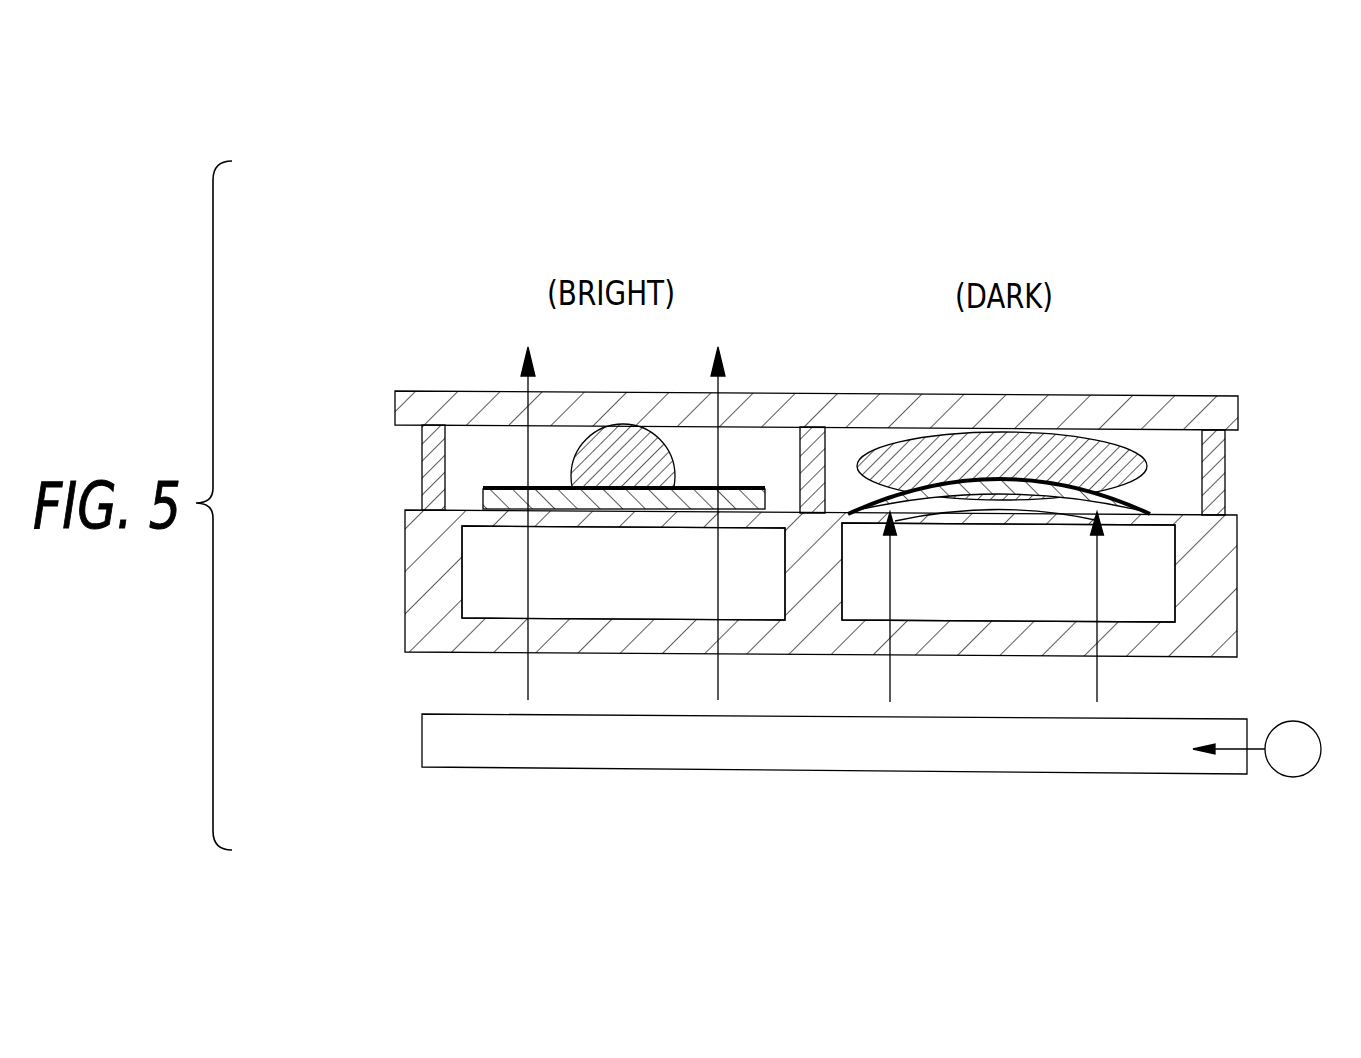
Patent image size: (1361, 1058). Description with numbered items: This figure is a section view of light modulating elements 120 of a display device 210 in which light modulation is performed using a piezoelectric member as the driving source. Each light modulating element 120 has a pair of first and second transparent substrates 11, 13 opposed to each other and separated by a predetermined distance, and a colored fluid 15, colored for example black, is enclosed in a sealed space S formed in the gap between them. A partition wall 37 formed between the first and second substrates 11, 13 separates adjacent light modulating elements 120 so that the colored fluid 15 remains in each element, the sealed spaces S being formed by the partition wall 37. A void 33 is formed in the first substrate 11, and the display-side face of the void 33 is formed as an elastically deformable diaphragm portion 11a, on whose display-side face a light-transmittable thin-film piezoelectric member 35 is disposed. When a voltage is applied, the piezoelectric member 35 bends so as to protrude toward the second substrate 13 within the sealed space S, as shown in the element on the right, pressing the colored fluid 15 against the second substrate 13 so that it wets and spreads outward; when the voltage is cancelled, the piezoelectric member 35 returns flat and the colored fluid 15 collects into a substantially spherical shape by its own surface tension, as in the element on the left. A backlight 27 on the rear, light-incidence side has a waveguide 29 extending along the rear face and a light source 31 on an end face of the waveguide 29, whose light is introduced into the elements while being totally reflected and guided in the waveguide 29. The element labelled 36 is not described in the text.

The first transparent substrate 11 is at (403, 598).
The diaphragm portion 11a is at (631, 528).
The second transparent substrate 13 is at (393, 408).
The colored fluid 15 is at (615, 440).
The backlight 27 is at (1266, 712).
The waveguide 29 is at (507, 753).
The light source 31 is at (1293, 766).
The void 33 is at (485, 598).
The piezoelectric member 35 is at (420, 497).
The electrode on film 36 is at (760, 486).
The partition wall 37 is at (427, 470).
The light modulating element 120 is at (476, 350).
The display device 210 is at (1070, 258).
The sealed space S is at (483, 443).